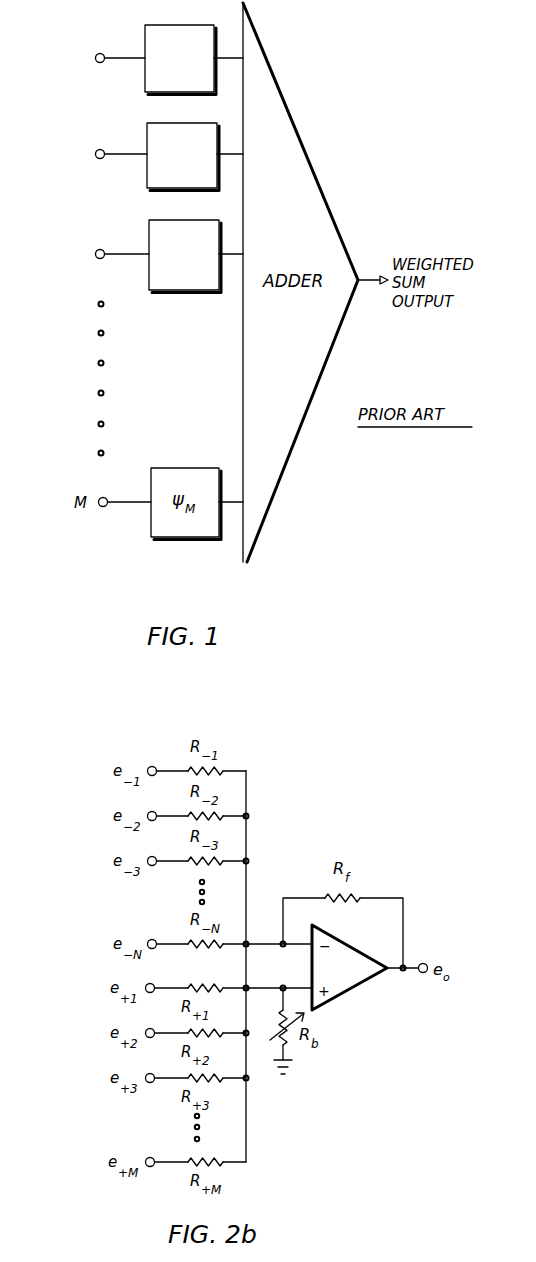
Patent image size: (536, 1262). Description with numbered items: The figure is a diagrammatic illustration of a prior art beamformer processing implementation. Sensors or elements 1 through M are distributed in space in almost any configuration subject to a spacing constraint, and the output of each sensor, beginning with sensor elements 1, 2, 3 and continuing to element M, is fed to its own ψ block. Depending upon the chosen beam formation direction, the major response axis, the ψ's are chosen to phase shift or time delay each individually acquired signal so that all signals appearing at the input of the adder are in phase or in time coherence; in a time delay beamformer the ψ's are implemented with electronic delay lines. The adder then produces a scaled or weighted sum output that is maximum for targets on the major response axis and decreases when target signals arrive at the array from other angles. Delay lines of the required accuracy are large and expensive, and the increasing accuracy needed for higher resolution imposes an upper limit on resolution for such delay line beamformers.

The sensor element 1 is at (161, 60).
The sensor element 2 is at (160, 157).
The sensor element 3 is at (160, 256).